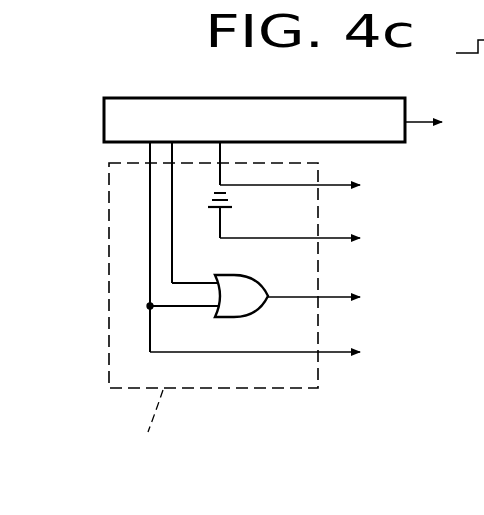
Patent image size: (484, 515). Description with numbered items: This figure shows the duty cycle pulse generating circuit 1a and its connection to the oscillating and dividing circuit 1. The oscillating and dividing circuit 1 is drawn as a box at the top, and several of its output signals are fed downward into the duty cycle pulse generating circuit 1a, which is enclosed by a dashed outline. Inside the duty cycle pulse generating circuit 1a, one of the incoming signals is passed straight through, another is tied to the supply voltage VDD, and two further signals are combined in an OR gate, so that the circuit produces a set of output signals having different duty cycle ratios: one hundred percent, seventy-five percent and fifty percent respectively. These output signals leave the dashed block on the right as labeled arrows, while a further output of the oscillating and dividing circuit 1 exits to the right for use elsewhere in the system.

The oscillating and dividing circuit 1 is at (282, 97).
The duty cycle pulse generating circuit 1a is at (212, 315).
The supply voltage VDD is at (247, 215).